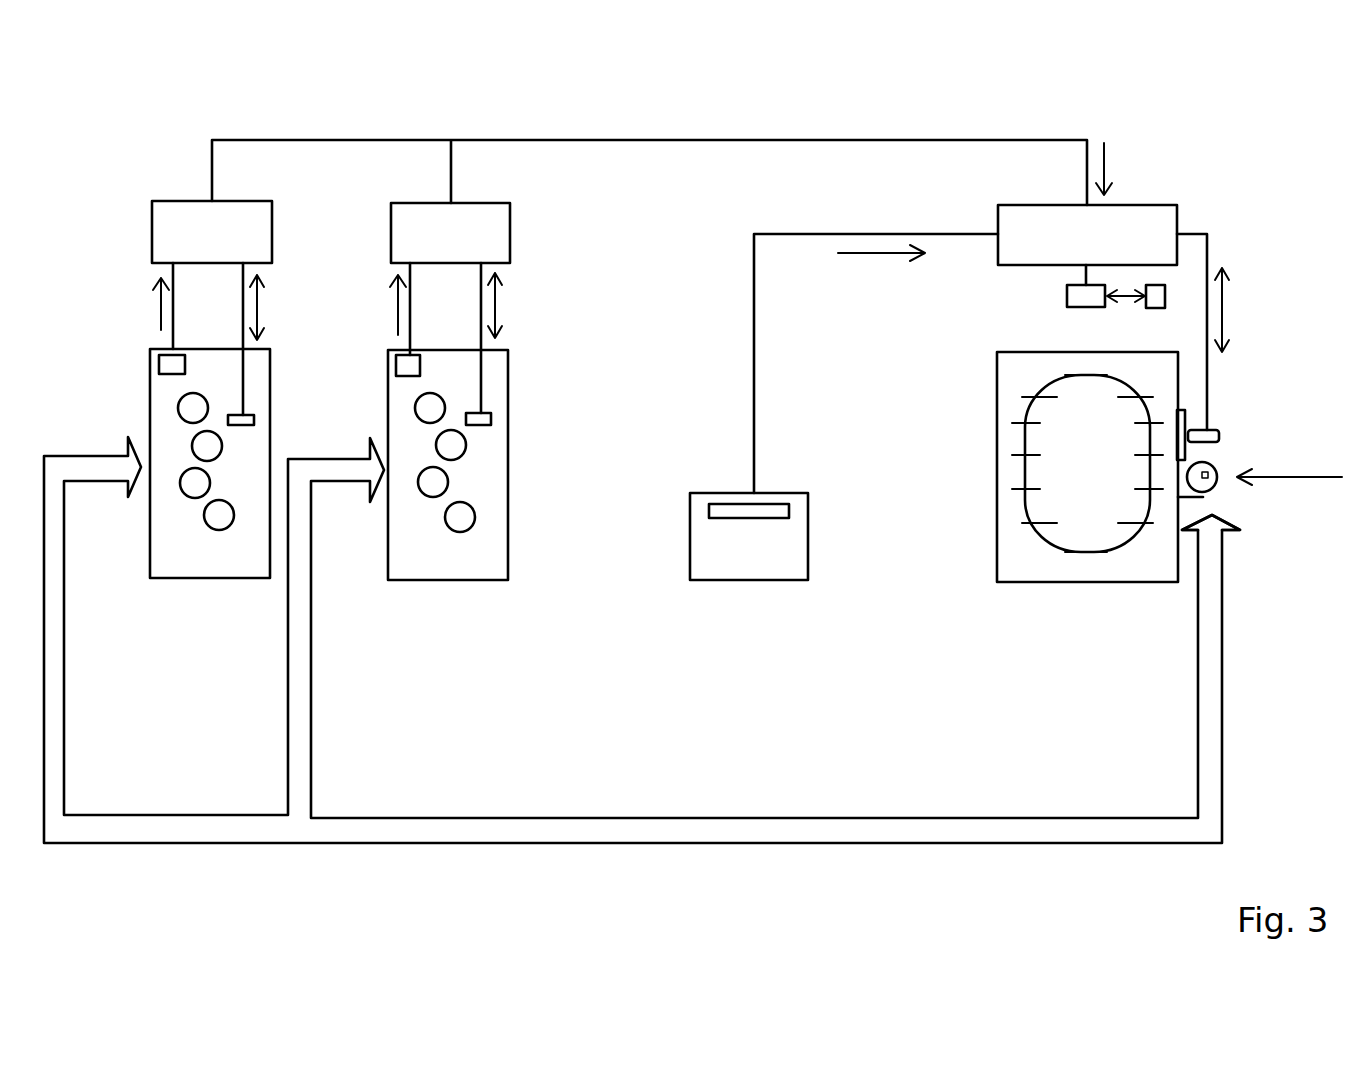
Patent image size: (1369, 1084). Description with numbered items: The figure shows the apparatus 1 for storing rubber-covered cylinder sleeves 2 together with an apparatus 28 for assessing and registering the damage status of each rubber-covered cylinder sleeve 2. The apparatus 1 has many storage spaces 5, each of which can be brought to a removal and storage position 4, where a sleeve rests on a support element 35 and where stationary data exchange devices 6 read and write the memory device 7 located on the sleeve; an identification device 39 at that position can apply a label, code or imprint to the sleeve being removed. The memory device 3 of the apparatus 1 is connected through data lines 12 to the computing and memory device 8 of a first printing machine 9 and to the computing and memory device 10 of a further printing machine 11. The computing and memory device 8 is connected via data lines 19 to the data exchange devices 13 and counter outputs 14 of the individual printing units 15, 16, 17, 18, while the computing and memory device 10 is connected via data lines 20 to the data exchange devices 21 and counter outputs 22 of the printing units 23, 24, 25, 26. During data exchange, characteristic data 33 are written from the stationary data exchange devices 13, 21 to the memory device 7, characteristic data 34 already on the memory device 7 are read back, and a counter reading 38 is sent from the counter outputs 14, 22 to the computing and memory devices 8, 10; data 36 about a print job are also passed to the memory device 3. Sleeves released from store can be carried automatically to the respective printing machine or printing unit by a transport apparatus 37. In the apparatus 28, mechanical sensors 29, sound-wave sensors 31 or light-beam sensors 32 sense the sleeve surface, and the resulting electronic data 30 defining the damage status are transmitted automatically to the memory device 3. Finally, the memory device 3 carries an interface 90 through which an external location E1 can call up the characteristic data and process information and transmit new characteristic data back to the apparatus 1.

The apparatus for storing rubber-covered cylinder sleeves 1 is at (1078, 632).
The rubber-covered cylinder sleeve 2 is at (1208, 485).
The memory device 3 is at (1152, 228).
The removal and storage position 4 is at (1303, 479).
The storage space 5 is at (1085, 553).
The data exchange device 6 is at (1210, 432).
The memory device on the sleeve 7 is at (1208, 462).
The computing and memory device 8 is at (495, 236).
The first printing machine 9 is at (486, 528).
The computing and memory device 10 is at (165, 228).
The further printing machine 11 is at (197, 528).
The data line 12 is at (977, 140).
The data exchange device 13 is at (493, 418).
The counter output 14 is at (398, 362).
The printing unit 15 is at (430, 408).
The printing unit 16 is at (451, 445).
The printing unit 17 is at (433, 482).
The printing unit 18 is at (460, 517).
The data line 19 is at (481, 305).
The data line 20 is at (243, 300).
The data exchange device 21 is at (255, 420).
The counter output 22 is at (165, 364).
The printing unit 23 is at (193, 408).
The printing unit 24 is at (207, 446).
The printing unit 25 is at (195, 483).
The printing unit 26 is at (219, 515).
The apparatus for assessing and registering the damage status 28 is at (844, 477).
The mechanical sensor 29 is at (834, 525).
The electronic data 30 is at (870, 262).
The sound-wave sensor 31 is at (749, 511).
The light-beam sensor 32 is at (780, 512).
The characteristic data 33 is at (262, 298).
The characteristic data 34 is at (1225, 310).
The support element 35 is at (1205, 500).
The data about a print job 36 is at (1110, 160).
The transport apparatus 37 is at (905, 830).
The counter reading 38 is at (157, 297).
The identification device 39 is at (1185, 420).
The interface 90 is at (1065, 291).
The external location E1 is at (1165, 297).